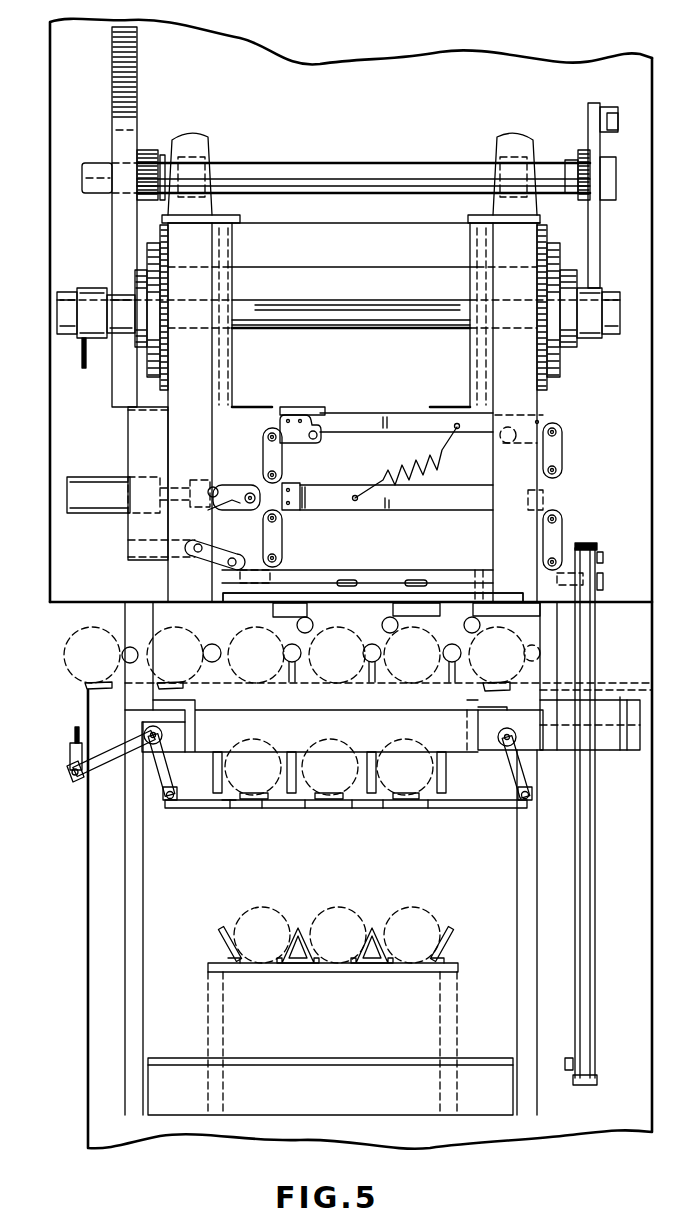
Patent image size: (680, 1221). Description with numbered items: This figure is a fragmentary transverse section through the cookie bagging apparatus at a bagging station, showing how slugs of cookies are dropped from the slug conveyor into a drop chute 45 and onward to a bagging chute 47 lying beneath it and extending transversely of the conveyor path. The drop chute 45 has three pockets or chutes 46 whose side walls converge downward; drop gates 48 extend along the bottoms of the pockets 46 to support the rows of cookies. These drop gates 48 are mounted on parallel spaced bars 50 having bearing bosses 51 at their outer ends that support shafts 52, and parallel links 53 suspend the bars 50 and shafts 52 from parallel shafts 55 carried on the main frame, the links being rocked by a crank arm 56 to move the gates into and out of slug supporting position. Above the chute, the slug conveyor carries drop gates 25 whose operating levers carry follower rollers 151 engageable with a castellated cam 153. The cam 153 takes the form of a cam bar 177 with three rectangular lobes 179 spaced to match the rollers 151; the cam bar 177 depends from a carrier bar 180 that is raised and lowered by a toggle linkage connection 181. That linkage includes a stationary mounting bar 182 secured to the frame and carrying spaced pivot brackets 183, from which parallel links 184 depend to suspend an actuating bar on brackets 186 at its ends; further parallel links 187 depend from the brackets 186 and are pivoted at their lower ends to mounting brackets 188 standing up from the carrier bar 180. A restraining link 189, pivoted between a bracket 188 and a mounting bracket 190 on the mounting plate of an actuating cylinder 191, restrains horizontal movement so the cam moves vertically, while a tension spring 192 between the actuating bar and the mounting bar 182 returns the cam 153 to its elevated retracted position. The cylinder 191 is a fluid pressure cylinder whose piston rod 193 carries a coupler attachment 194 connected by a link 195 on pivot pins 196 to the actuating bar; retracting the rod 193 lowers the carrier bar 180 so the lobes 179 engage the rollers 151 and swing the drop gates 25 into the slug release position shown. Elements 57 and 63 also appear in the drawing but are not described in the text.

The drop gate 25 is at (72, 684).
The drop chute 45 is at (467, 812).
The pockets or chutes 46 is at (328, 830).
The bagging chute 47 is at (453, 943).
The drop gates 48 is at (272, 810).
The parallel spaced bars 50 is at (227, 813).
The bearing bosses 51 is at (147, 812).
The shafts 52 is at (180, 813).
The parallel links 53 is at (158, 773).
The parallel shafts 55 is at (145, 732).
The crank arm 56 is at (142, 735).
The stop 57 is at (70, 743).
The gear 63 is at (128, 103).
The follower roller 151 is at (313, 625).
The castellated cam 153 is at (483, 608).
The cam bar 177 is at (348, 588).
The lobes 179 is at (432, 608).
The carrier bar 180 is at (485, 577).
The toggle linkage connection 181 is at (262, 455).
The mounting bar 182 is at (395, 420).
The pivot brackets 183 is at (318, 420).
The parallel links 184 is at (290, 457).
The brackets 186 is at (297, 479).
The parallel links 187 is at (283, 537).
The mounting brackets 188 is at (243, 580).
The restraining link 189 is at (215, 553).
The mounting bracket 190 is at (180, 560).
The actuating cylinder 191 is at (93, 477).
The tension spring 192 is at (405, 460).
The piston rod 193 is at (178, 485).
The coupler attachment 194 is at (205, 470).
The link 195 is at (237, 482).
The pivot pin 196 is at (232, 505).